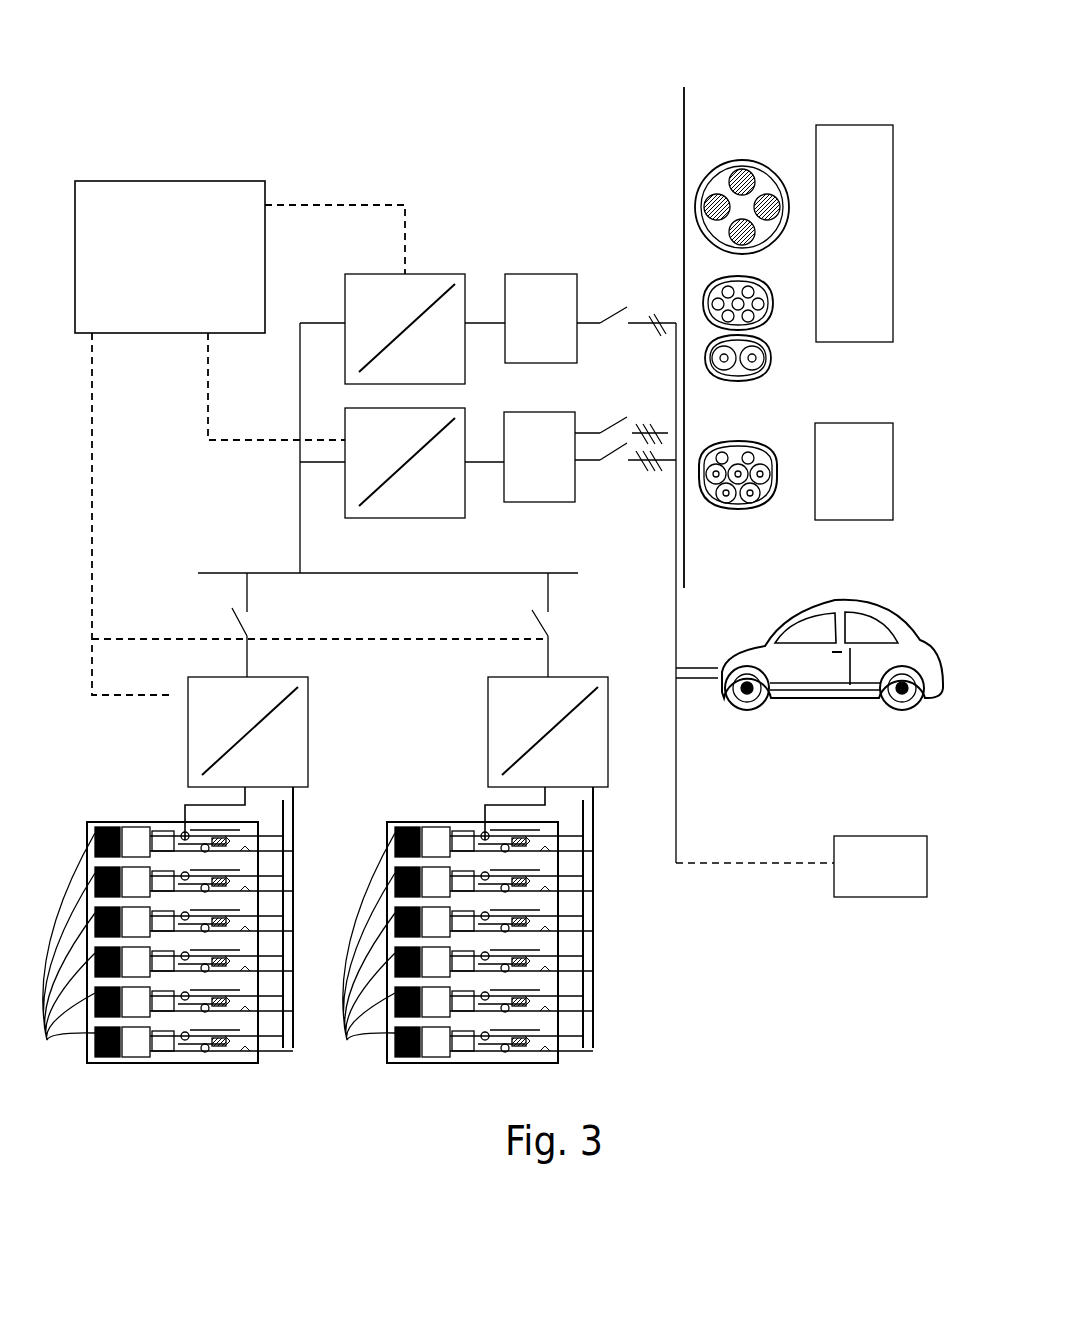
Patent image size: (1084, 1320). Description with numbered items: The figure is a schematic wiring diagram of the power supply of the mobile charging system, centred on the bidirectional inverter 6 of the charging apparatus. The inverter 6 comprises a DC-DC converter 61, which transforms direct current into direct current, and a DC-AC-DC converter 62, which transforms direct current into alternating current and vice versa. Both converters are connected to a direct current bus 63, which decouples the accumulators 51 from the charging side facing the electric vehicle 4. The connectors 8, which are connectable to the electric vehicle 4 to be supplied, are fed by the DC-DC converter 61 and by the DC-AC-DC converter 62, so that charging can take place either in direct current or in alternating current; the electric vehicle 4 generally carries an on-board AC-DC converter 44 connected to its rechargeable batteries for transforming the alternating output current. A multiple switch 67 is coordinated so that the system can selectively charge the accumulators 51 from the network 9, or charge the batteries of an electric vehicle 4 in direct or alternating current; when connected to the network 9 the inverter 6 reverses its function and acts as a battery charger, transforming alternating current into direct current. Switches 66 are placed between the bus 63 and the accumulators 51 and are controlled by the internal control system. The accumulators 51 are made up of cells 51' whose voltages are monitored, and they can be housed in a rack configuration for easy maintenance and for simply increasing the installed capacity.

The inverter 6 is at (552, 85).
The DC-DC converter 61 is at (428, 272).
The DC-AC-DC converter 62 is at (410, 518).
The direct current bus 63 is at (448, 575).
The switches 66 is at (225, 613).
The multiple switch 67 is at (642, 265).
The connectors 8 is at (778, 122).
The AC-DC converter 44 is at (862, 483).
The electric vehicle 4 is at (866, 752).
The network 9 is at (918, 852).
The accumulators 51 is at (392, 948).
The battery module 51' is at (318, 925).